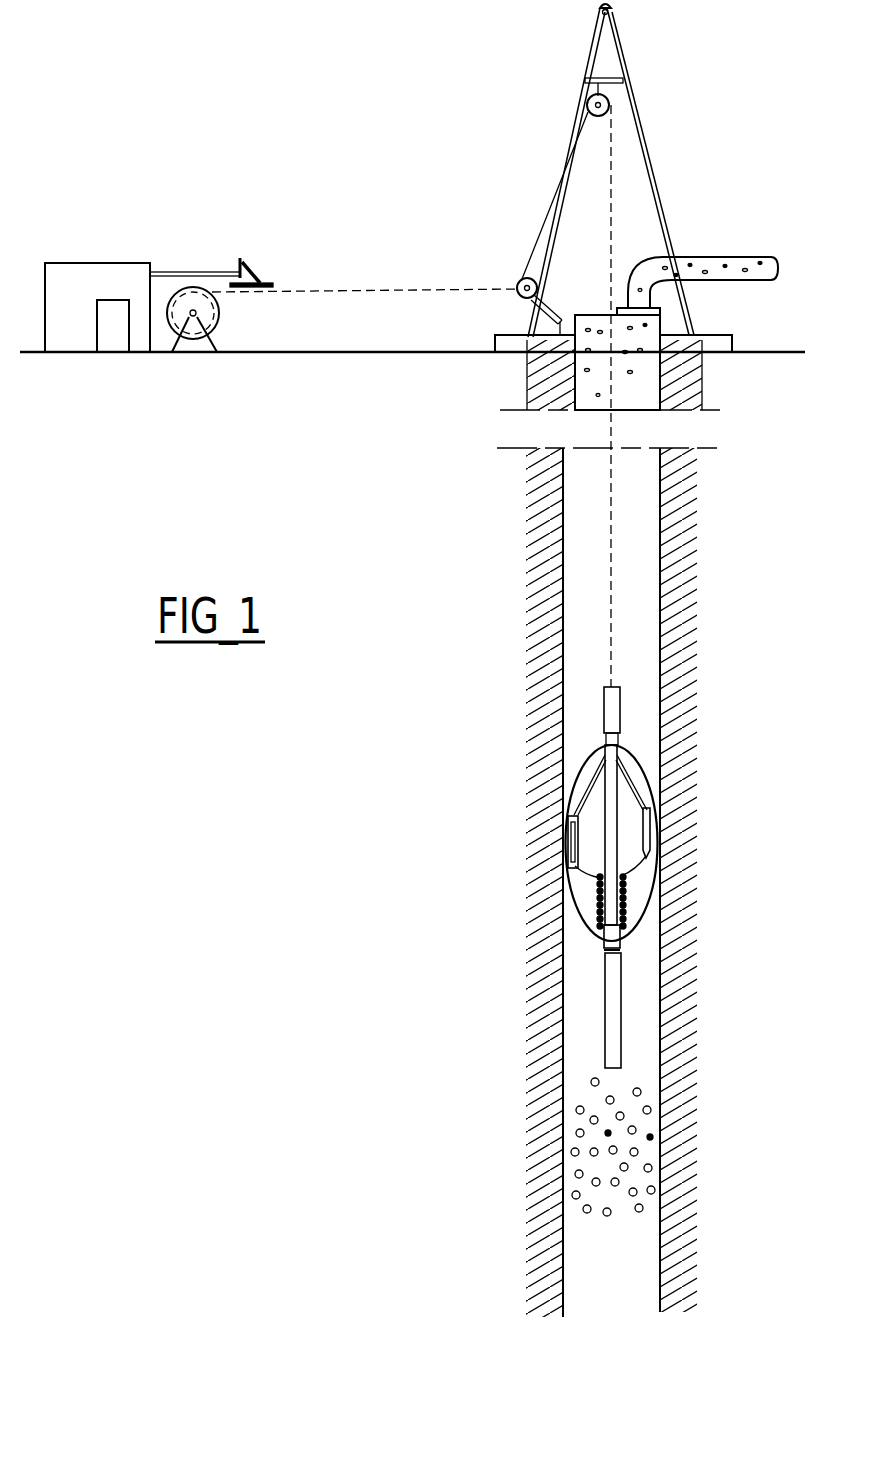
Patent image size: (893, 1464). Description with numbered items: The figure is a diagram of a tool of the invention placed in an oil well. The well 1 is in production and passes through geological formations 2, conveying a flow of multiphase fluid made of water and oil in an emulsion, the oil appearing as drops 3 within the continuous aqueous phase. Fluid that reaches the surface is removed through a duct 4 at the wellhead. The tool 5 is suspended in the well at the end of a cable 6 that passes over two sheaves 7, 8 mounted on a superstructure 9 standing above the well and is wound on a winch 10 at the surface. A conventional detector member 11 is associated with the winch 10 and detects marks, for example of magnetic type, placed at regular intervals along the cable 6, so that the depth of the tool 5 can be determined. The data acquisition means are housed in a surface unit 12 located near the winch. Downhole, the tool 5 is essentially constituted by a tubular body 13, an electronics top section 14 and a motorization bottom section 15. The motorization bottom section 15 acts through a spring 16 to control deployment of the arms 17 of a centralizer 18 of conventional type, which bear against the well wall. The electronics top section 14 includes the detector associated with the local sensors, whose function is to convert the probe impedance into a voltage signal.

The well 1 is at (640, 1040).
The geological formations 2 is at (682, 968).
The drops 3 is at (578, 1155).
The duct 4 is at (763, 254).
The tool 5 is at (583, 760).
The cable 6 is at (612, 238).
The sheave 7 is at (588, 108).
The sheave 8 is at (526, 278).
The superstructure 9 is at (650, 160).
The winch 10 is at (217, 322).
The detector member 11 is at (238, 260).
The surface unit 12 is at (72, 280).
The tubular body 13 is at (614, 800).
The electronics top section 14 is at (614, 710).
The motorization bottom section 15 is at (612, 1004).
The spring 16 is at (628, 900).
The arms 17 is at (600, 878).
The centralizer 18 is at (655, 808).